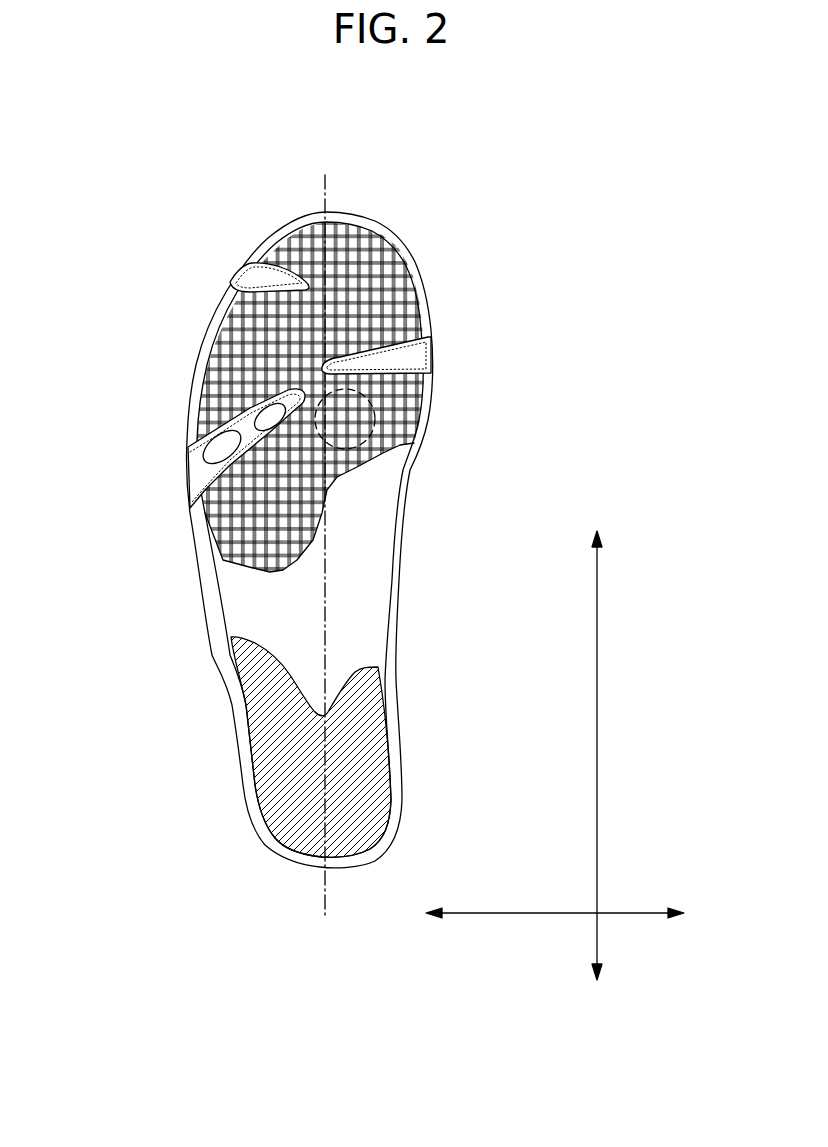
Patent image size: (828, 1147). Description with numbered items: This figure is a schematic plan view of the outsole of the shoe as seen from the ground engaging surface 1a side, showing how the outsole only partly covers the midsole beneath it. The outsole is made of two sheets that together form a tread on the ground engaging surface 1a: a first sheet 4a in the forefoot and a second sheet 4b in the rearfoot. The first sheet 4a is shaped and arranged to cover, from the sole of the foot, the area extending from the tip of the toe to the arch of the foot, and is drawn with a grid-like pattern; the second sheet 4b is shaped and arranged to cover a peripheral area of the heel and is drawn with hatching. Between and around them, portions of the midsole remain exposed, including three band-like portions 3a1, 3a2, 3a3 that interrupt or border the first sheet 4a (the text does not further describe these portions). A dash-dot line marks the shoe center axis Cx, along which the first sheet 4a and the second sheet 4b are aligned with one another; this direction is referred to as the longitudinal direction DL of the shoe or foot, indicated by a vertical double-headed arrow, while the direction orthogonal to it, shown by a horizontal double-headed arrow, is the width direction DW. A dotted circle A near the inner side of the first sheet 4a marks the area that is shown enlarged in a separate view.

The ground engaging surface 1a is at (100, 124).
The shoe center axis Cx is at (331, 534).
The first sheet 4a is at (378, 294).
The second sheet 4b is at (370, 750).
The first reinforcing band (3a) 3a1 is at (260, 277).
The second reinforcing band with openings (3a) 3a2 is at (205, 463).
The third reinforcing band (3a) 3a3 is at (410, 359).
The dotted circle A is at (375, 431).
The longitudinal direction DL is at (622, 755).
The width direction DW is at (555, 896).